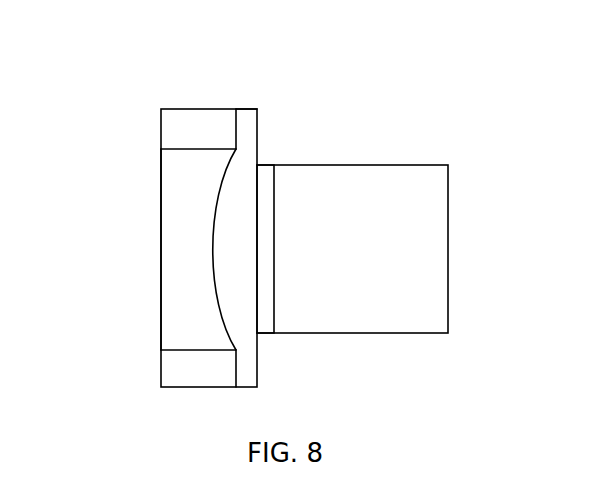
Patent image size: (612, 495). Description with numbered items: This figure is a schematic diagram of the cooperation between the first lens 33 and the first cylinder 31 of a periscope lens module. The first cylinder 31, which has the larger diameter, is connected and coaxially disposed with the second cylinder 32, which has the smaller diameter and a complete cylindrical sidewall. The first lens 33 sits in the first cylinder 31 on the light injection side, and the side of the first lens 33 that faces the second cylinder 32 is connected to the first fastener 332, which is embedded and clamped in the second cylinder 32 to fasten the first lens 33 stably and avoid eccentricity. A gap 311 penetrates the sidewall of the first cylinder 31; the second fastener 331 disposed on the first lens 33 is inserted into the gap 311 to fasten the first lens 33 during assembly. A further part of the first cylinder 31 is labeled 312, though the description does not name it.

The first cylinder 31 is at (172, 230).
The gap 311 is at (172, 205).
The flange portion 312 is at (182, 132).
The second cylinder 32 is at (388, 177).
The first lens 33 is at (243, 302).
The second fastener 331 is at (248, 120).
The first fastener 332 is at (275, 178).